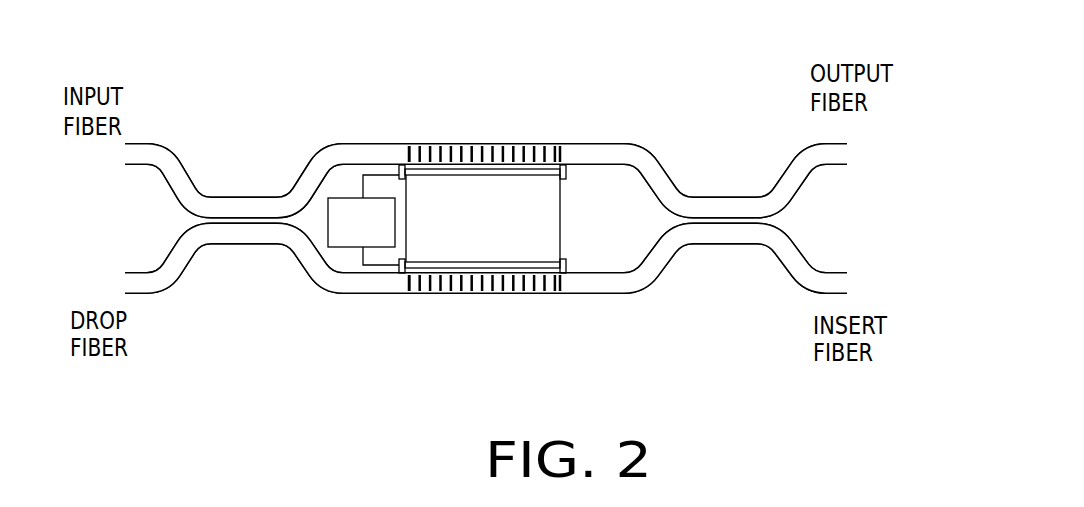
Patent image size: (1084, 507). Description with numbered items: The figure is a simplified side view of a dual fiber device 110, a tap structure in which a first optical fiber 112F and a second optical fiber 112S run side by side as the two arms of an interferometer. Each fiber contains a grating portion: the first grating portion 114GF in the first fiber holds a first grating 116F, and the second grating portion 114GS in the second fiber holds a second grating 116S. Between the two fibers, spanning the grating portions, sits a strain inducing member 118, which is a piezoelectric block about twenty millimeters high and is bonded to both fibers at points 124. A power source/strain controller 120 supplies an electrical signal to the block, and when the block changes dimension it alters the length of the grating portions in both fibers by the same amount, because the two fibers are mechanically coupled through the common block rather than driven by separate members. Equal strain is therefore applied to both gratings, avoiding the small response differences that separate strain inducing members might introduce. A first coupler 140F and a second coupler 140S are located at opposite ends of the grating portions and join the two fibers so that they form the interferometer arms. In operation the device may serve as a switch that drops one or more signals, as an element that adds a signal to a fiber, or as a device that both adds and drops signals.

The dual fiber device 110 is at (486, 213).
The first optical fiber 112F is at (647, 145).
The second optical fiber 112S is at (630, 293).
The first grating portion 114GF is at (458, 145).
The second grating portion 114GS is at (462, 292).
The first grating 116F is at (447, 145).
The second grating 116S is at (432, 292).
The strain inducing member 118 is at (535, 218).
The power source/strain controller 120 is at (327, 233).
The bonding points 124 is at (398, 166).
The first coupler 140F is at (236, 198).
The second coupler 140S is at (723, 207).